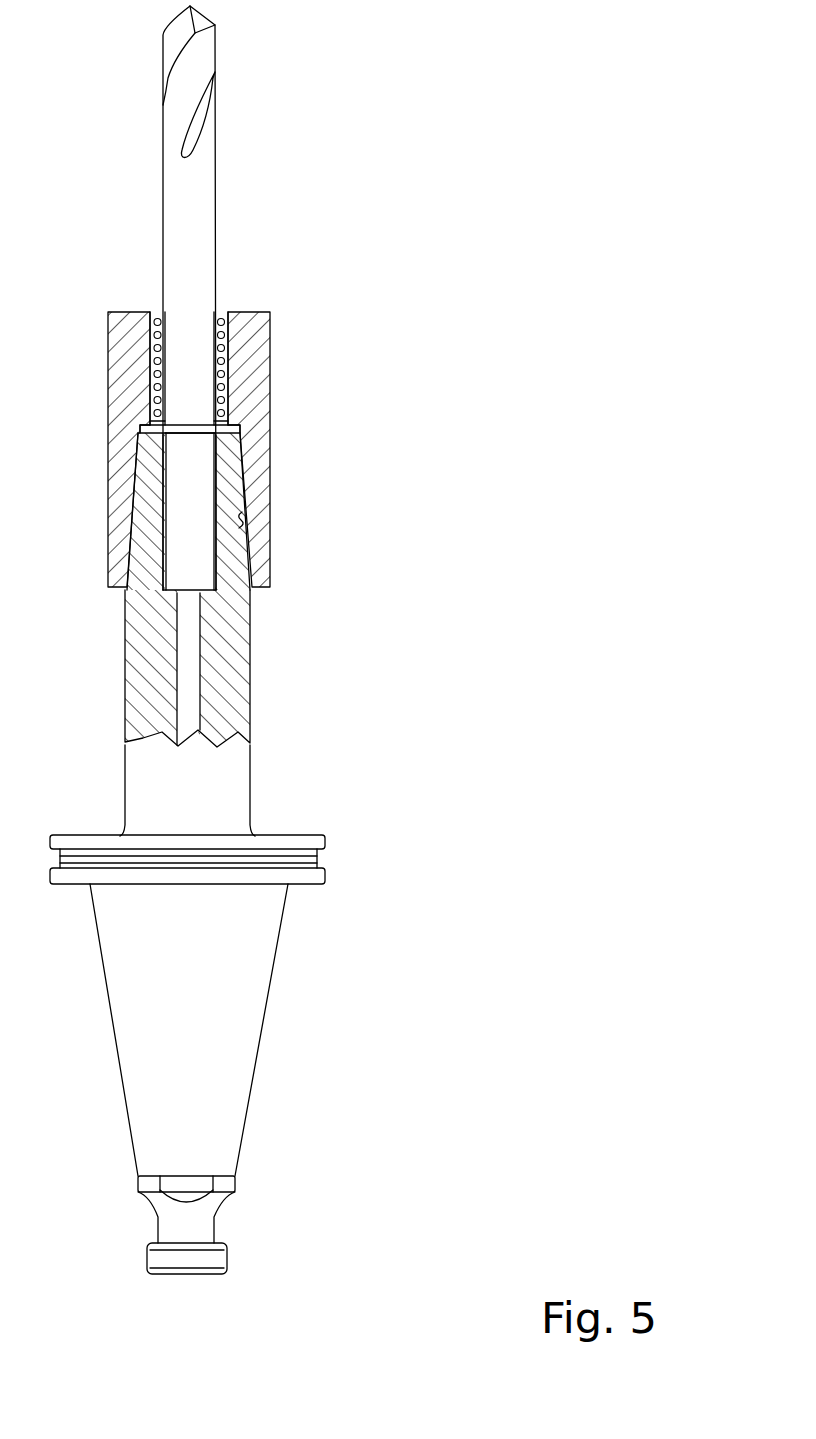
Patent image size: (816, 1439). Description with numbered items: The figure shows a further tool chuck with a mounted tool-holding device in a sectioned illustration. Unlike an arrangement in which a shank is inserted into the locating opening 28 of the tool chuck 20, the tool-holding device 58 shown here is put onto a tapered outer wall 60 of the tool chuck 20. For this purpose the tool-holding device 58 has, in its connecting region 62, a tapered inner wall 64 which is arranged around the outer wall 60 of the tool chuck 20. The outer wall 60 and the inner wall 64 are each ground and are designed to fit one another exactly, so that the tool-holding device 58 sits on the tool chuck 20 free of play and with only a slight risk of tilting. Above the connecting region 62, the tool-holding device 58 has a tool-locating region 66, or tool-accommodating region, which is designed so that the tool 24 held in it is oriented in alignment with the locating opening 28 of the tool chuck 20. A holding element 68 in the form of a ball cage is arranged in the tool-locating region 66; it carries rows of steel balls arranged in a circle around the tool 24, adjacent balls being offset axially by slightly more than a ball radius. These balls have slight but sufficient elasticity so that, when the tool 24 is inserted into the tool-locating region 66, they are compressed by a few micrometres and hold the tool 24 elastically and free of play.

The tool chuck 20 is at (233, 657).
The tool 24 is at (187, 230).
The locating opening 28 is at (187, 575).
The tool-holding device 58 is at (293, 409).
The tapered outer wall 60 is at (263, 573).
The connecting region 62 is at (252, 470).
The tapered inner wall 64 is at (252, 512).
The tool-locating region 66 is at (270, 312).
The holding element 68 is at (237, 365).